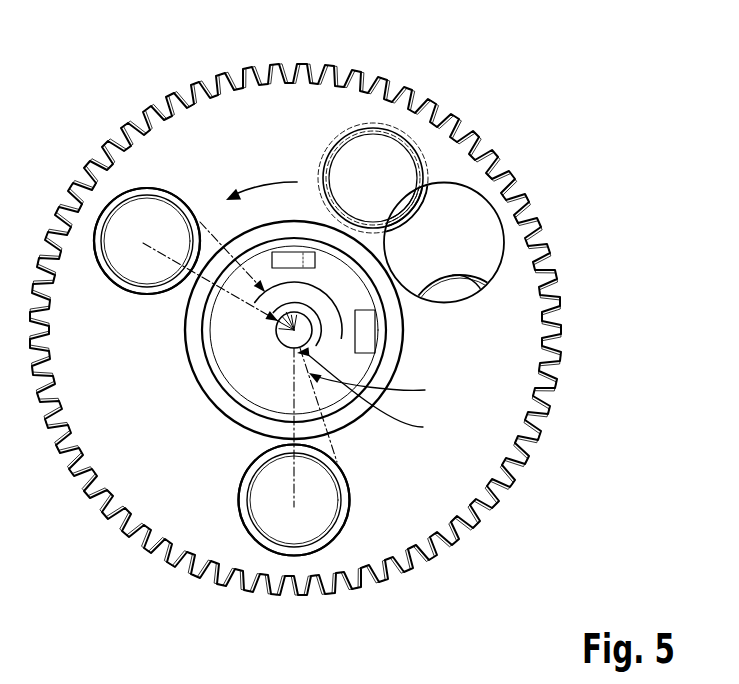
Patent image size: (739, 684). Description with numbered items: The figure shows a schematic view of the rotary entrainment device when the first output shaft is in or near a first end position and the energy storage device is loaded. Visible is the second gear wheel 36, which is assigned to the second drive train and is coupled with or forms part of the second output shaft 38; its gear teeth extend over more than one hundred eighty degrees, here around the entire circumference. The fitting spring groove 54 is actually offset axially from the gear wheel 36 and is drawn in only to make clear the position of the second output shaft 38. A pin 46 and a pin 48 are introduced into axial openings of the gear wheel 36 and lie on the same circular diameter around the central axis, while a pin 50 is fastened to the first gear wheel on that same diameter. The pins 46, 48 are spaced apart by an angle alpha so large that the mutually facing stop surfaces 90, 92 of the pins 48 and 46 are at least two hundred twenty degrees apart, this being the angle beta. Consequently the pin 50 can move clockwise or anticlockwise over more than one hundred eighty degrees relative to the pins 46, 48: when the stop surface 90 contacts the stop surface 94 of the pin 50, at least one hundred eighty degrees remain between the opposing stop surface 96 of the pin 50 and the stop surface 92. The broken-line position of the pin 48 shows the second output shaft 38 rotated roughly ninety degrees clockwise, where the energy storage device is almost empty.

The second gear wheel 36 is at (442, 500).
The second output shaft 38 is at (283, 391).
The pin 46 is at (303, 555).
The pin 48 is at (123, 197).
The pin 50 is at (498, 252).
The spring groove 54 is at (298, 262).
The stop surface 90 is at (185, 197).
The stop surface 92 is at (349, 498).
The stop surface 94 is at (412, 198).
The stop surface 96 is at (482, 298).